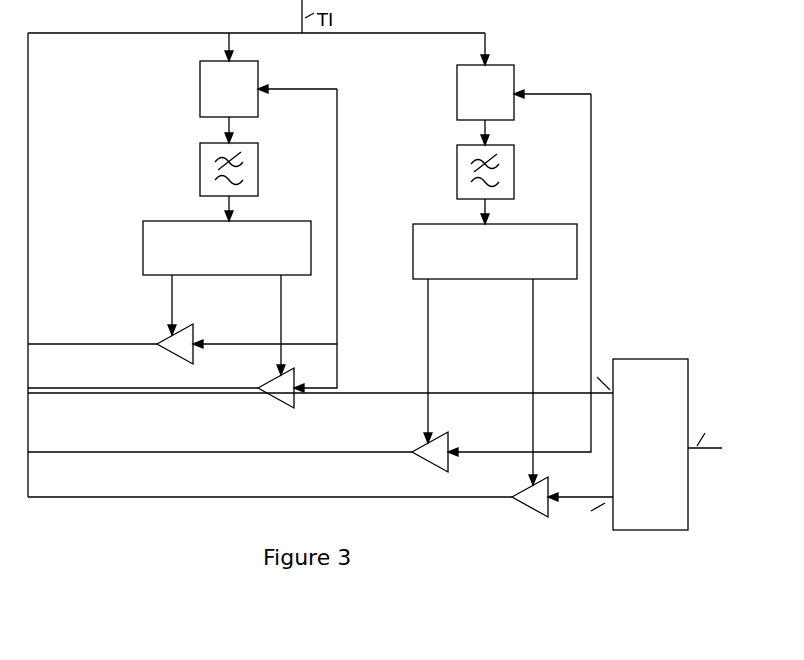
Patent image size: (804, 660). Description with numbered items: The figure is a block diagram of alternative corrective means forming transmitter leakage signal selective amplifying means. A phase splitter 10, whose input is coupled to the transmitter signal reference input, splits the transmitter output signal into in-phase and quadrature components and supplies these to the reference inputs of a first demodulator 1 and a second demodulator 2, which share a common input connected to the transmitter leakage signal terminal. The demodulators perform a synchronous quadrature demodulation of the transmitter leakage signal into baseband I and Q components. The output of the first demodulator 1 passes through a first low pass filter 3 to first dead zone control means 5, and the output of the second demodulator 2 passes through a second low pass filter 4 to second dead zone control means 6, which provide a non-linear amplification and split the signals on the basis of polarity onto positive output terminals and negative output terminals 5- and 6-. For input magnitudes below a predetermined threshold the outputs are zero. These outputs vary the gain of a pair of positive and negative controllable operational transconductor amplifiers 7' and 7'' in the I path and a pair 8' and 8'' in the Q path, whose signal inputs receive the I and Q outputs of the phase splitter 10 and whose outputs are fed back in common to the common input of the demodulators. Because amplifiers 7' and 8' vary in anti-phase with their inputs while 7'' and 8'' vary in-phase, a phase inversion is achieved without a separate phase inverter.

The first demodulator 1 is at (267, 65).
The second demodulator 2 is at (517, 83).
The first low pass filter 3 is at (267, 149).
The second low pass filter 4 is at (522, 152).
The first dead zone control means 5 is at (289, 219).
The negative output terminal 5- is at (283, 278).
The second dead zone control means 6 is at (554, 221).
The negative output terminal 6- is at (537, 281).
The positive controllable operational transconductor amplifier 7' is at (169, 339).
The negative controllable operational transconductor amplifier 7'' is at (268, 382).
The positive controllable operational transconductor amplifier 8' is at (417, 447).
The negative controllable operational transconductor amplifier 8'' is at (515, 493).
The phase splitter 10 is at (640, 357).